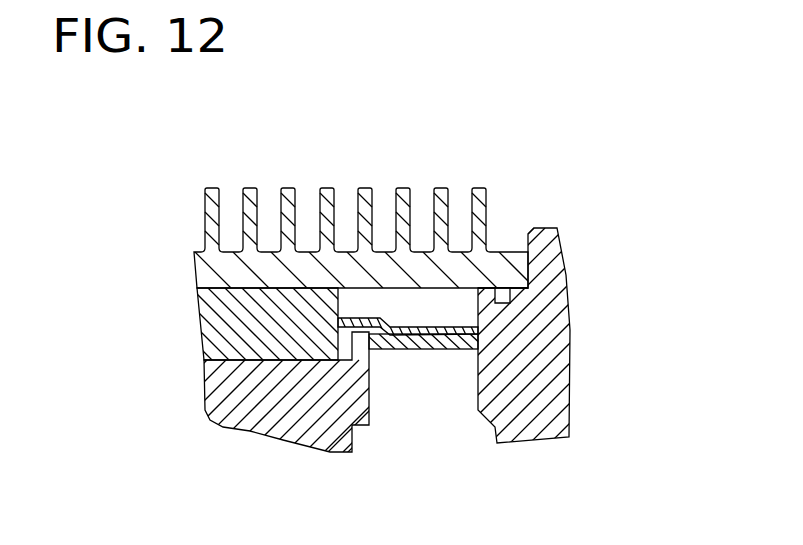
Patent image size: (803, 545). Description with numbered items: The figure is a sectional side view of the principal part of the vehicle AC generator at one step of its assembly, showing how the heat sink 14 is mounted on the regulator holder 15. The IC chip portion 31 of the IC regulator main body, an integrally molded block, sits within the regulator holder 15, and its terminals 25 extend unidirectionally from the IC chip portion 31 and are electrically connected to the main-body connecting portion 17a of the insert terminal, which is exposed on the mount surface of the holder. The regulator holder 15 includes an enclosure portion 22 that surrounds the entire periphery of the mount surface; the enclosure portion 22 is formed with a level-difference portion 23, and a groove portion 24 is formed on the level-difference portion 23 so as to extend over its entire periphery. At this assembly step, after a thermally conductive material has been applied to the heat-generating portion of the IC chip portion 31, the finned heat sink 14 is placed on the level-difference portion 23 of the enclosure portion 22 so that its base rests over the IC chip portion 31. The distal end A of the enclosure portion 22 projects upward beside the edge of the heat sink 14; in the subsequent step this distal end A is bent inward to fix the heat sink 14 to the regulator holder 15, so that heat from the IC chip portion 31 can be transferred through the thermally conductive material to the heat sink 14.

The heat sink 14 is at (205, 215).
The regulator holder 15 is at (285, 428).
The main-body connecting portion 17a is at (424, 342).
The enclosure portion 22 is at (557, 238).
The level-difference portion 23 is at (482, 286).
The groove portion 24 is at (510, 294).
The terminals 25 is at (382, 320).
The IC chip portion 31 is at (212, 323).
The distal end A is at (545, 228).